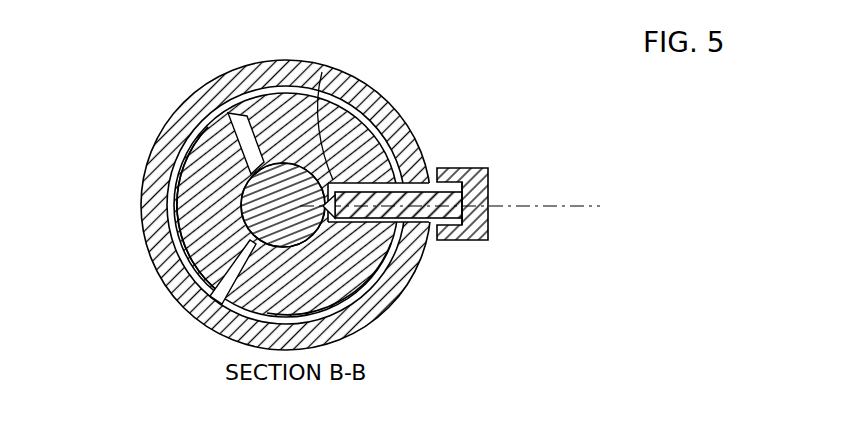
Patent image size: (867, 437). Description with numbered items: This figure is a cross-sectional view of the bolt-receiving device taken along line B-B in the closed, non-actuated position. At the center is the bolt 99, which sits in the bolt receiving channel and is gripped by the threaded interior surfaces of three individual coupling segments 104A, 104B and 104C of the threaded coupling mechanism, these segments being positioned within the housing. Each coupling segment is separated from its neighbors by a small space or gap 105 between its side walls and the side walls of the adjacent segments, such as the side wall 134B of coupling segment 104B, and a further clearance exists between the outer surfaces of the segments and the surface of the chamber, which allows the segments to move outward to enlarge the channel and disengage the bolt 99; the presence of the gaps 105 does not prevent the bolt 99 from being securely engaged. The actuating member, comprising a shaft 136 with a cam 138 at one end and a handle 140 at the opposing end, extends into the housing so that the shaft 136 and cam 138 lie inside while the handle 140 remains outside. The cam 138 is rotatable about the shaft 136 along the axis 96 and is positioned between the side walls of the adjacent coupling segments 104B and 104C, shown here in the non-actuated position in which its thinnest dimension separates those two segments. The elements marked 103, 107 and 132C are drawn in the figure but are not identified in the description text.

The axis 96 is at (563, 200).
The bolt 99 is at (262, 192).
The outer sleeve 103 is at (153, 232).
The coupling segment 104A is at (162, 282).
The coupling segment 104B is at (398, 116).
The coupling segment 104C is at (388, 275).
The gap 105 is at (245, 68).
The inner ring 107 is at (333, 222).
The slot 132C is at (380, 265).
The side wall 134B is at (400, 172).
The shaft 136 is at (443, 172).
The cam 138 is at (322, 72).
The handle 140 is at (487, 200).